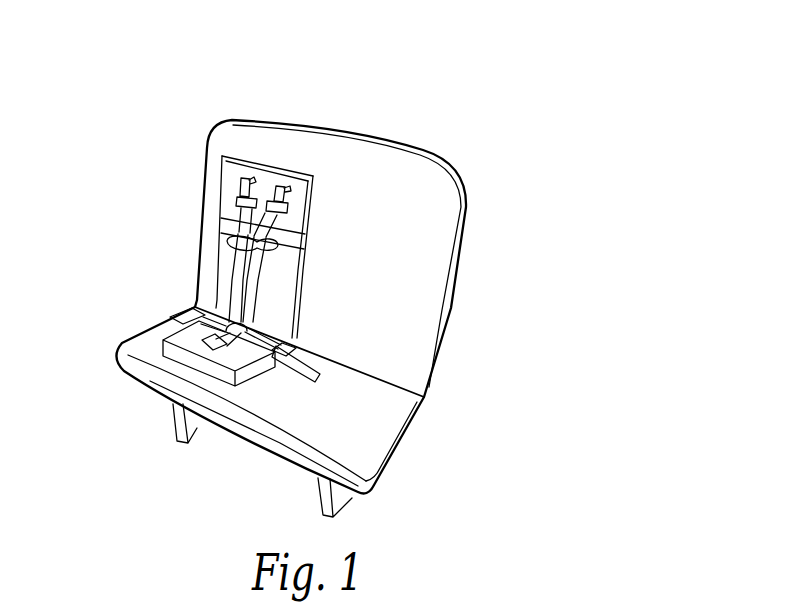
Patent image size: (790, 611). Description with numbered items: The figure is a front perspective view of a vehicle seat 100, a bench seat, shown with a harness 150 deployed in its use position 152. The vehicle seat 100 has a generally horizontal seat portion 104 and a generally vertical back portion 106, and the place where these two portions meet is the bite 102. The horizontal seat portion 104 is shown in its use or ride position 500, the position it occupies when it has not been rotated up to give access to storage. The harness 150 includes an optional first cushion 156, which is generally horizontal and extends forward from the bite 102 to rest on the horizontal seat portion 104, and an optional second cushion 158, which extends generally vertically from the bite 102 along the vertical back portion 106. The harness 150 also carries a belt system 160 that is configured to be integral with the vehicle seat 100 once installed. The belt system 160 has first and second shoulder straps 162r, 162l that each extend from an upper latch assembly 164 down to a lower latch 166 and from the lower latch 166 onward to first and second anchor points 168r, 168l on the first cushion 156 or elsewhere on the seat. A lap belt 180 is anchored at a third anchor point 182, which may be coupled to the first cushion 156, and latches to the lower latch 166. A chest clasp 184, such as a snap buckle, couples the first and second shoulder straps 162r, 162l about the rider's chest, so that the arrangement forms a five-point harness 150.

The vehicle seat 100 is at (577, 233).
The bite 102 is at (437, 362).
The horizontal seat portion 104 is at (390, 470).
The vertical back portion 106 is at (463, 259).
The harness 150 is at (221, 230).
The use position 152 is at (238, 104).
The first cushion 156 is at (192, 362).
The second cushion 158 is at (291, 216).
The belt system 160 is at (291, 200).
The first shoulder strap 162r is at (223, 173).
The second shoulder strap 162l is at (307, 234).
The upper latch assembly 164 is at (253, 176).
The lower latch 166 is at (288, 334).
The first anchor point 168r is at (191, 311).
The second anchor point 168l is at (286, 372).
The lap belt 180 is at (215, 362).
The third anchor point 182 is at (167, 358).
The chest clasp 184 is at (280, 249).
The use or ride position 500 is at (151, 283).